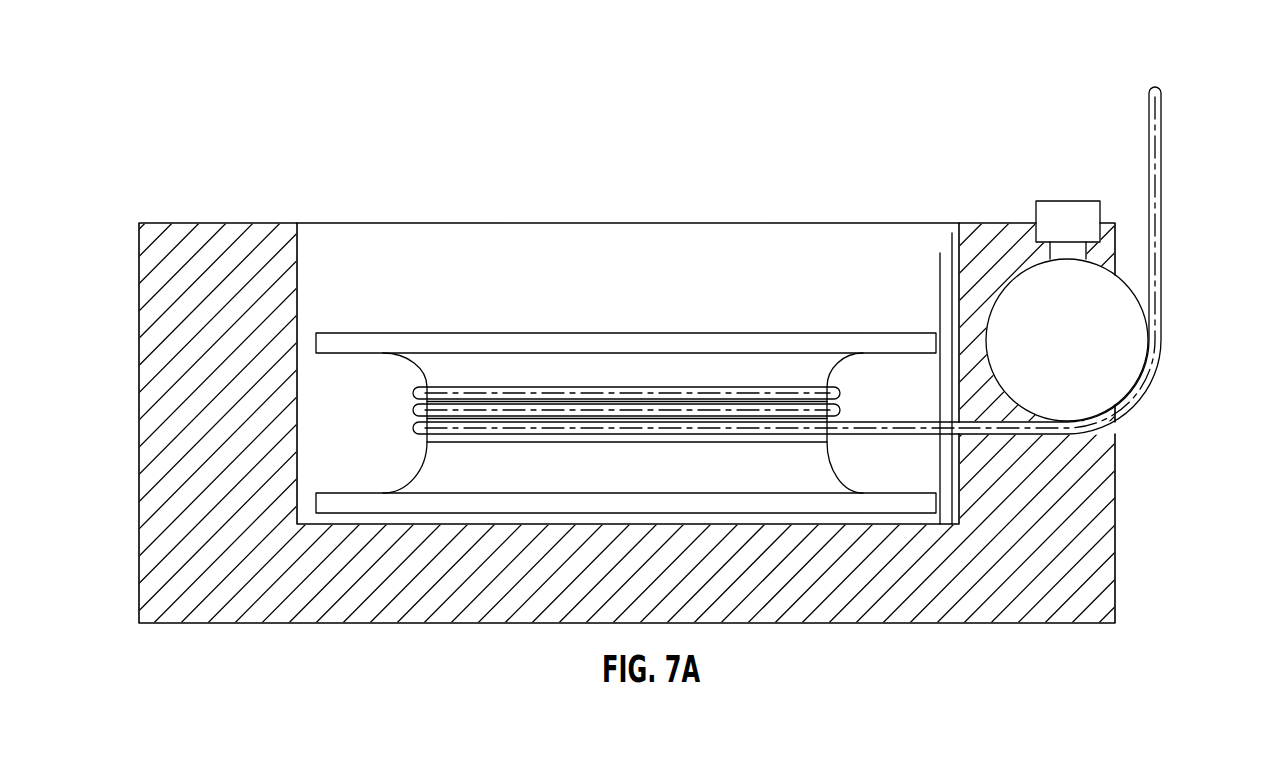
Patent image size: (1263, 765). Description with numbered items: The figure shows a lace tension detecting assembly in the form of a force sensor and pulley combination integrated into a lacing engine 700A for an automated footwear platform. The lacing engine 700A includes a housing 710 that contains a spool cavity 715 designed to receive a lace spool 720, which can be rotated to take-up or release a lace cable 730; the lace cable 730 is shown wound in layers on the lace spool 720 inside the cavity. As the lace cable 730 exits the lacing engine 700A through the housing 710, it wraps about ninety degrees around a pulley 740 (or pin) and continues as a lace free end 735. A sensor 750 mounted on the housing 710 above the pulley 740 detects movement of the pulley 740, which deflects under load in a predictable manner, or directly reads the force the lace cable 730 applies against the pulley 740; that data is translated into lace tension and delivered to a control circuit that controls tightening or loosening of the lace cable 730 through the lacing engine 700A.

The lacing engine 700A is at (202, 88).
The housing 710 is at (155, 235).
The spool cavity 715 is at (325, 220).
The lace spool 720 is at (434, 333).
The lace cable 730 is at (415, 392).
The lace free end 735 is at (1160, 113).
The pulley 740 is at (1073, 348).
The sensor 750 is at (1067, 199).